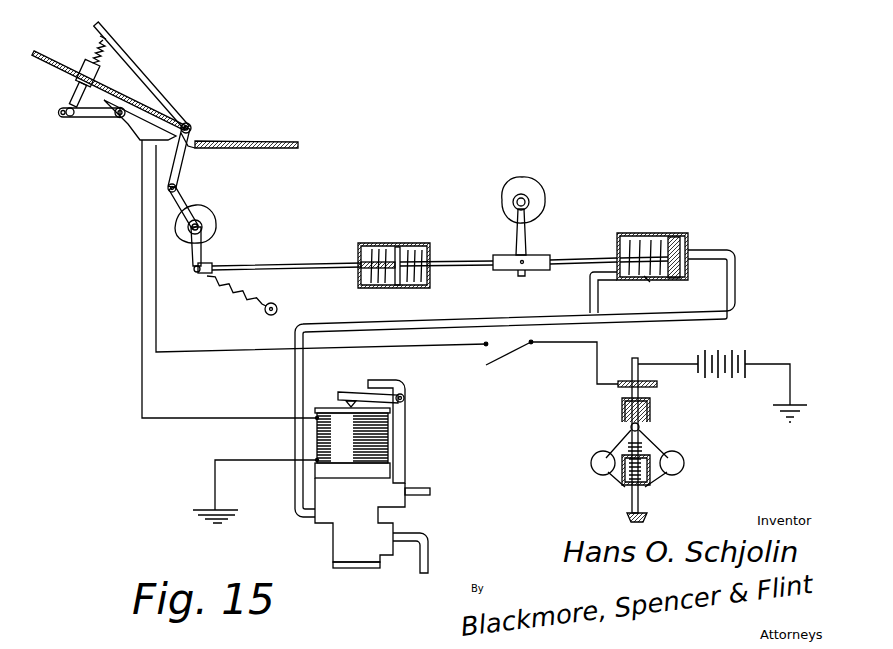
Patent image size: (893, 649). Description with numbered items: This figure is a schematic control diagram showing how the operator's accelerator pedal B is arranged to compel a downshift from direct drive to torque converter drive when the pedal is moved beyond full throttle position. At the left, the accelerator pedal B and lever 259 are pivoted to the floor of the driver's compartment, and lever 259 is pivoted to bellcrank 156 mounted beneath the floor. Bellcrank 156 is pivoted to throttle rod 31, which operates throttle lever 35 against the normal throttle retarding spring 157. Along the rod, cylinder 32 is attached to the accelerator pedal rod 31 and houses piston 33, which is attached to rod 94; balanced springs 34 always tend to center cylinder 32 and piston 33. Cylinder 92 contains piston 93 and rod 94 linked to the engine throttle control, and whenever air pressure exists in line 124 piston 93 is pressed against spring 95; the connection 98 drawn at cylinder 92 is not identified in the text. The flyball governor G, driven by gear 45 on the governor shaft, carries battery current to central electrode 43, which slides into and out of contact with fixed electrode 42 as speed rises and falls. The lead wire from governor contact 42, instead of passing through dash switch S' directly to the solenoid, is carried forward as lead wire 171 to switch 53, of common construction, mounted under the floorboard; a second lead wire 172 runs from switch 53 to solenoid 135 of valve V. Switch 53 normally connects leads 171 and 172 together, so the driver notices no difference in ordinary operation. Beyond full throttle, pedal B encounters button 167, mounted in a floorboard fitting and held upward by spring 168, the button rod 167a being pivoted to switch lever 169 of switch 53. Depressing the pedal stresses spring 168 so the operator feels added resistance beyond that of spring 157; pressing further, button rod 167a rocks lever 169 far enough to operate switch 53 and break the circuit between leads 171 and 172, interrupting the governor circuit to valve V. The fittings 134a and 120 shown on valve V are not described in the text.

The accelerator pedal B is at (139, 70).
The lever 259 is at (181, 160).
The bellcrank 156 is at (212, 234).
The throttle rod 31 is at (270, 263).
The throttle retarding spring 157 is at (218, 283).
The switch S³ 53 is at (134, 126).
The button 167 is at (100, 34).
The spring 168 is at (93, 54).
The button rod 167a is at (68, 100).
The switch lever 169 is at (91, 118).
The lead wire 172 is at (142, 303).
The lead wire 171 is at (157, 332).
The dash switch S' is at (552, 362).
The cylinder 32 is at (368, 243).
The piston 33 is at (400, 246).
The balanced springs 34 is at (380, 286).
The throttle lever 35 is at (516, 232).
The rod 94 is at (593, 238).
The cylinder 92 is at (630, 236).
The piston 93 is at (673, 236).
The spring 95 is at (658, 278).
The conduit 98 is at (590, 292).
The fixed electrode 42 is at (650, 384).
The central electrode 43 is at (622, 404).
The flyball governor G is at (645, 458).
The gear 45 is at (648, 512).
The valve V is at (312, 474).
The solenoid 135 is at (326, 408).
The port 134a is at (418, 490).
The pipe 120 is at (427, 548).
The line 124 is at (295, 500).